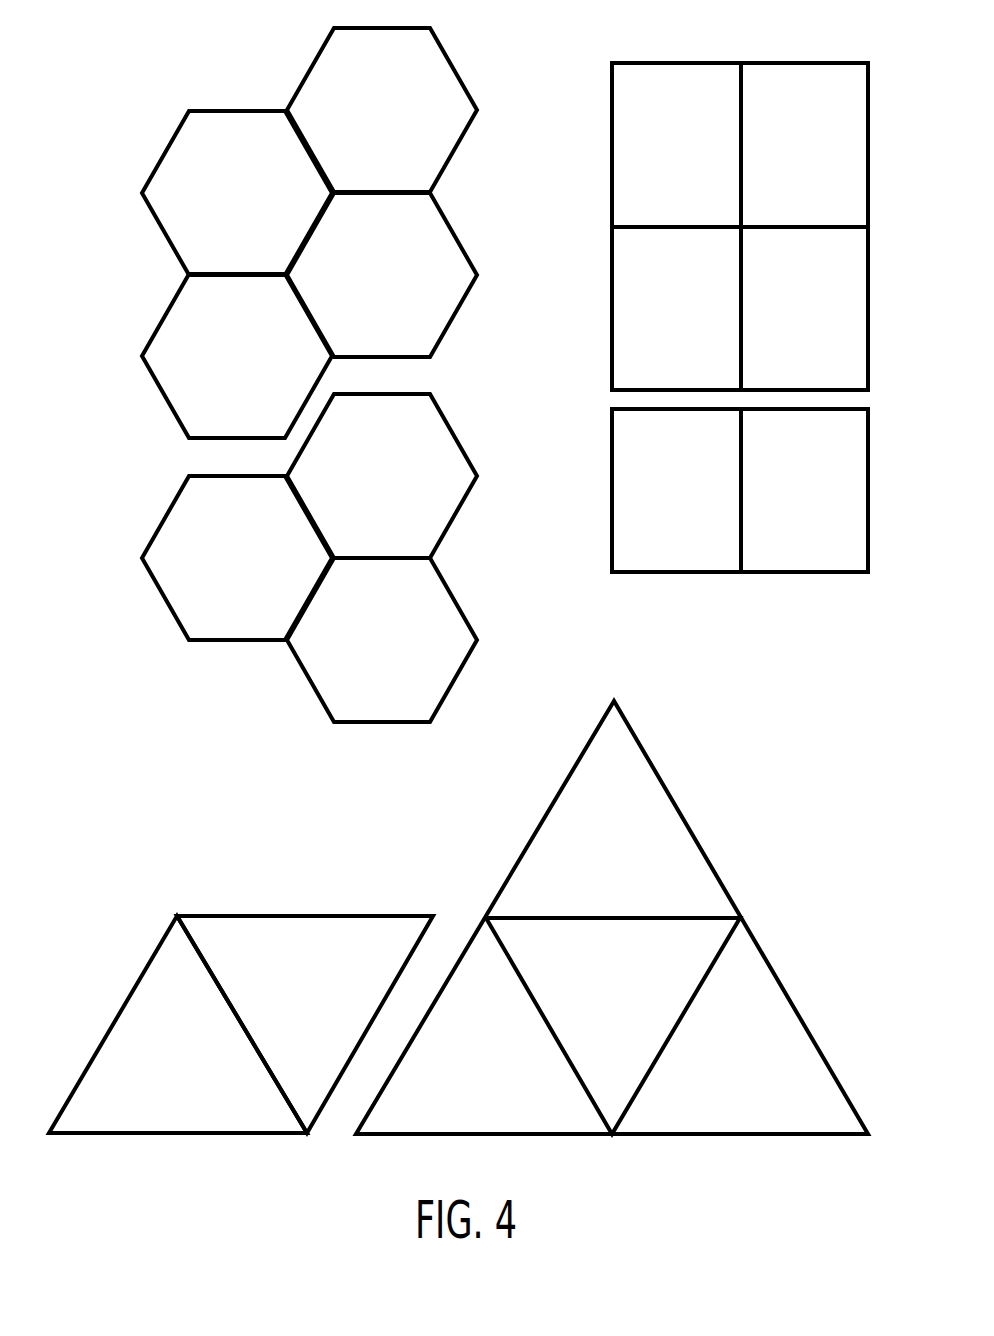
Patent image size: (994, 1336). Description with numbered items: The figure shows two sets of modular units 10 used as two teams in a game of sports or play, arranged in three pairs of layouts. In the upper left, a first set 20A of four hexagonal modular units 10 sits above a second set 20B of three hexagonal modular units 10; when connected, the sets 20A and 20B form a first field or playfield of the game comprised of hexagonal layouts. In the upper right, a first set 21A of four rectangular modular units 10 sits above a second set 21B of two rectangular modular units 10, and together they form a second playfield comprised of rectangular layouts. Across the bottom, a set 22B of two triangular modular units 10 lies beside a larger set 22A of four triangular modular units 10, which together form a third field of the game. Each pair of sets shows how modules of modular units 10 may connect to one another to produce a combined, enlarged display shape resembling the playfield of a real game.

The modular unit 10 is at (497, 590).
The first set of hexagonal modular units 20A is at (168, 143).
The second set of hexagonal modular units 20B is at (169, 508).
The first set of rectangular modular units 21A is at (697, 62).
The second set of rectangular modular units 21B is at (695, 573).
The first set of triangular modular units 22A is at (537, 822).
The second set of triangular modular units 22B is at (155, 952).